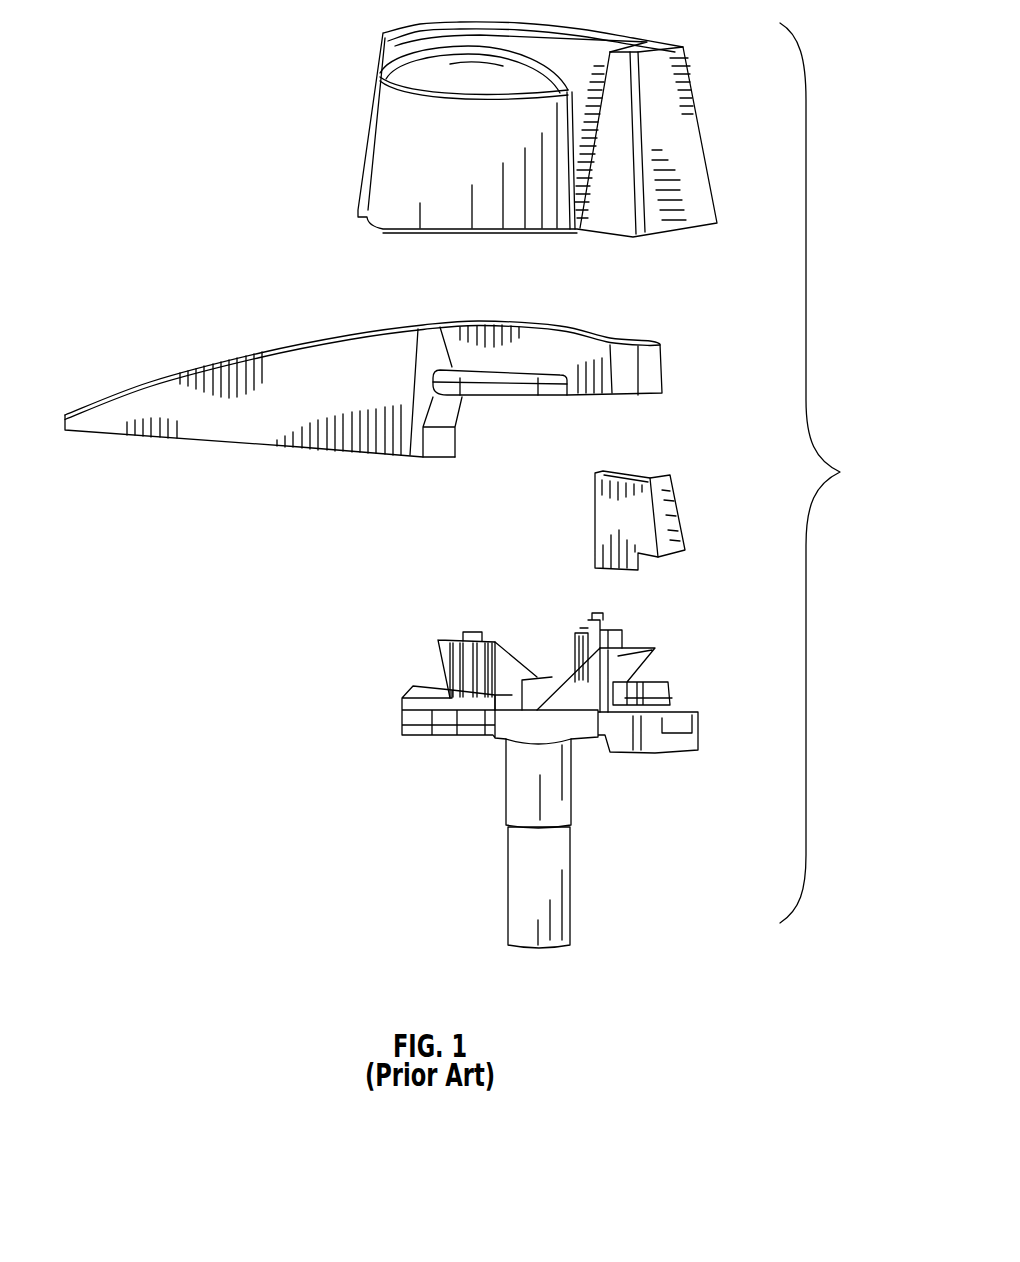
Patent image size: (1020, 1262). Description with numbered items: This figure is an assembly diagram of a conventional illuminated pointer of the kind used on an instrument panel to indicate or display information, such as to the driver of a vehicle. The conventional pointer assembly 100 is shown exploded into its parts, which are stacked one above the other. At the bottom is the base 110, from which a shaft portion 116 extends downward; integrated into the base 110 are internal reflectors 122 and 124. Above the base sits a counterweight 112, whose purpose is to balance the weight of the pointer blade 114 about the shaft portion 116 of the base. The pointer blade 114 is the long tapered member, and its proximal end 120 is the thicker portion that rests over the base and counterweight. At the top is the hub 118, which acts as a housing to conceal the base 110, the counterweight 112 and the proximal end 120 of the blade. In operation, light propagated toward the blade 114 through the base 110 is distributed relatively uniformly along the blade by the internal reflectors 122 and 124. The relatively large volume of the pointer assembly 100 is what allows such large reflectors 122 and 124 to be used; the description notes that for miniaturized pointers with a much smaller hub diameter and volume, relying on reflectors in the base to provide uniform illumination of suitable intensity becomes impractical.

The pointer assembly 100 is at (831, 473).
The base 110 is at (706, 732).
The counterweight 112 is at (680, 505).
The pointer blade 114 is at (170, 397).
The shaft portion 116 is at (572, 883).
The hub 118 is at (385, 170).
The proximal end 120 is at (623, 390).
The internal reflector 122 is at (512, 665).
The internal reflector 124 is at (615, 655).